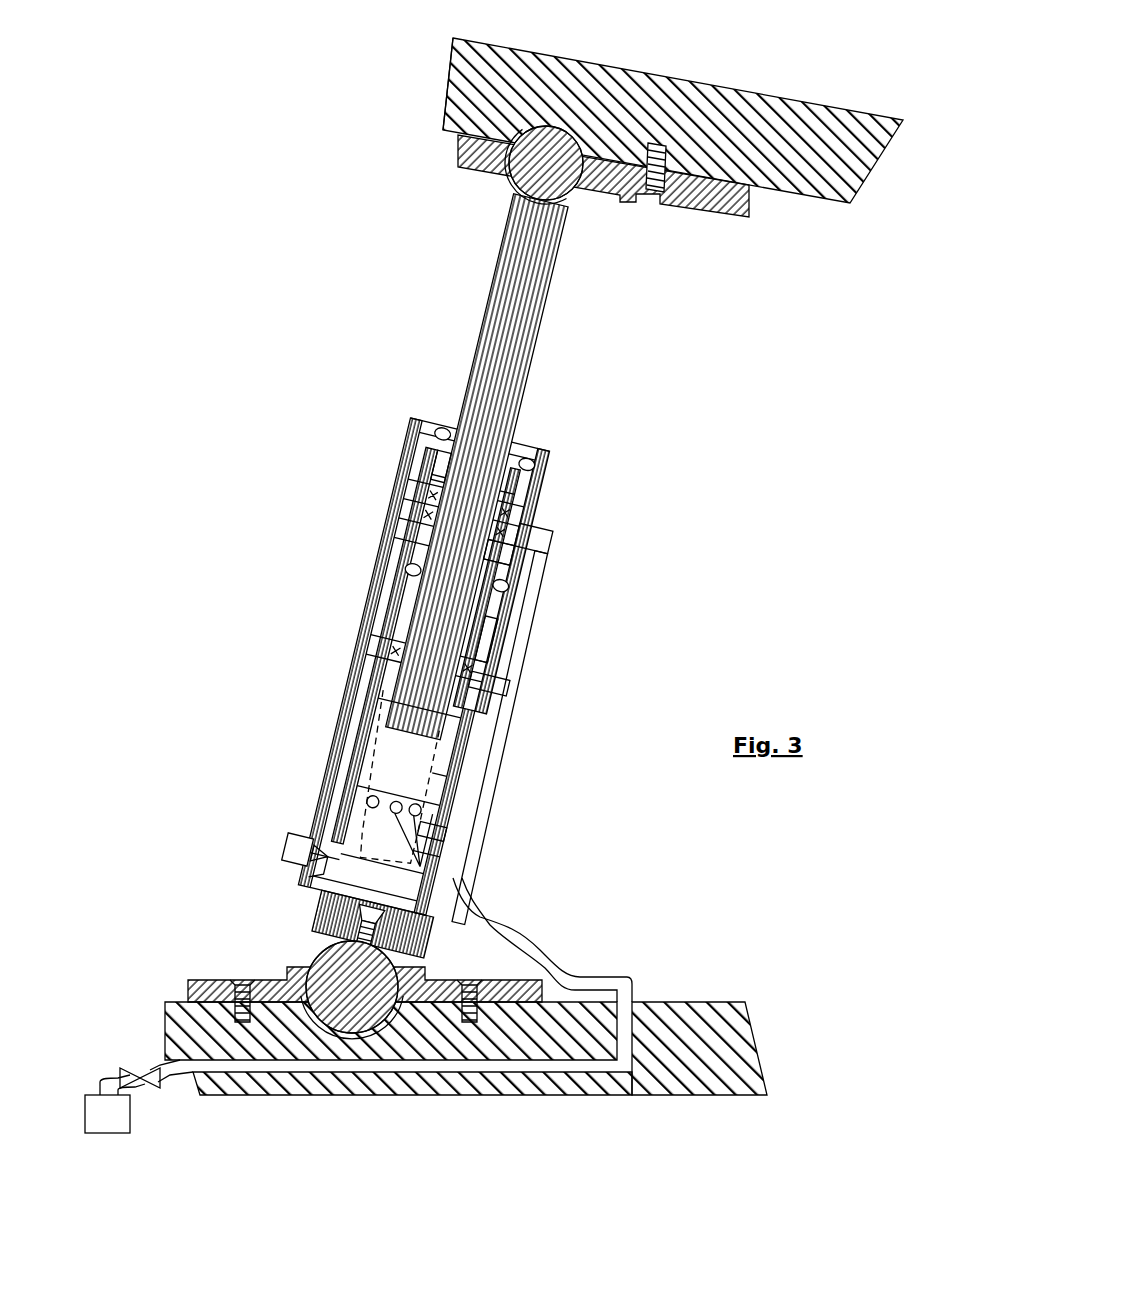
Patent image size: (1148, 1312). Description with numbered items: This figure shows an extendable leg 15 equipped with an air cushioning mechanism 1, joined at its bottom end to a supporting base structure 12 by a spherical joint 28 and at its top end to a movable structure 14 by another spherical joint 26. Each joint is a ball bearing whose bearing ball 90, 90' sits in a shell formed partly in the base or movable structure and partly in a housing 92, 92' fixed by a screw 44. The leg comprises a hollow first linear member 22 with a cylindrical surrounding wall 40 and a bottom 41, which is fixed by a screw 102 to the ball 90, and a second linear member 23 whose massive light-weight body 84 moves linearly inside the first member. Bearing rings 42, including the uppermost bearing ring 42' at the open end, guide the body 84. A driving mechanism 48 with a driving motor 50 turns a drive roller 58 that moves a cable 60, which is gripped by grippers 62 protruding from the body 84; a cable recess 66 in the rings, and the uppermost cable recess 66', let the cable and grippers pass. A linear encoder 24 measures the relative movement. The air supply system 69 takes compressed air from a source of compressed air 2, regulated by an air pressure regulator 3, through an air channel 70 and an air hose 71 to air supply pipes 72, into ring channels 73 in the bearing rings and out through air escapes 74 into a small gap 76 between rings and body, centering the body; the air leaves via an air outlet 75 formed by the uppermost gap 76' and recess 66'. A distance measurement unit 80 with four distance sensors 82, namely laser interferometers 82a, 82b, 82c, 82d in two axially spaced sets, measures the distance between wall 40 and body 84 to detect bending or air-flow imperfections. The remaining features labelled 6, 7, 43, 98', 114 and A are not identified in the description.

The air cushioning mechanism 1 is at (515, 700).
The source of compressed air 2 is at (139, 1096).
The air pressure regulator 3 is at (131, 1068).
The gap 6 is at (422, 443).
The base plate 7 is at (297, 1063).
The supporting base structure 12 is at (760, 1058).
The movable structure 14 is at (772, 153).
The extendable leg 15 is at (600, 422).
The first linear member 22 is at (350, 657).
The second linear member 23 is at (460, 372).
The linear encoder 24 is at (465, 628).
The spherical joint 26 is at (620, 245).
The spherical joint 28 is at (305, 958).
The surrounding wall 40 is at (320, 762).
The bottom 41 is at (320, 920).
The bearing ring 42 is at (541, 753).
The uppermost bearing ring 42' is at (569, 533).
The bore 43 is at (372, 795).
The screw 44 is at (663, 160).
The driving mechanism 48 is at (272, 843).
The driving motor 50 is at (305, 850).
The drive roller 58 is at (320, 885).
The drive cable 60 is at (360, 812).
The gripper 62 is at (380, 523).
The cable recess 66 is at (337, 687).
The uppermost cable recess 66' is at (351, 480).
The air supply system 69 is at (603, 970).
The air channel 70 is at (500, 737).
The air hose 71 is at (563, 957).
The air supply pipe 72 is at (463, 827).
The ring channel 73 is at (470, 805).
The air escape 74 is at (427, 867).
The air outlet 75 is at (405, 498).
The gap 76 is at (548, 665).
The uppermost gap 76' is at (571, 486).
The distance measurement unit 80 is at (445, 425).
The distance sensor 82 is at (467, 491).
The laser interferometer 82a is at (517, 590).
The laser interferometer 82b is at (400, 563).
The laser interferometer 82c is at (525, 462).
The laser interferometer 82d is at (435, 418).
The body 84 is at (510, 265).
The bearing ball 90 is at (256, 985).
The bearing ball 90' is at (544, 105).
The housing 92 is at (328, 984).
The housing 92' is at (656, 116).
The surface 98' is at (374, 103).
The screw 102 is at (499, 923).
The rod end 114 is at (540, 175).
The stroke A is at (417, 795).